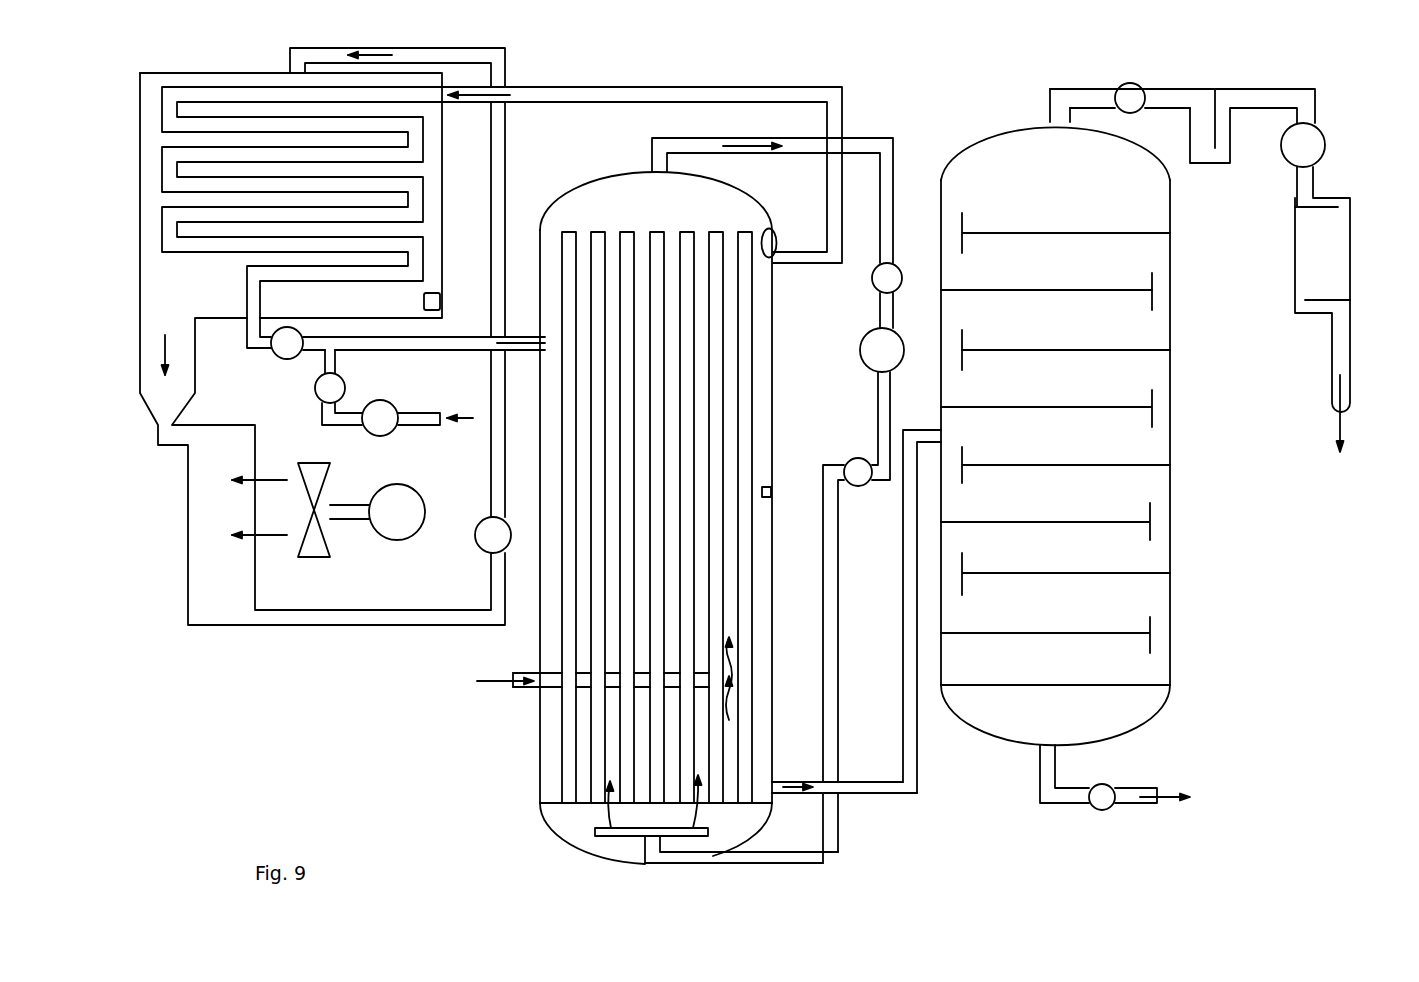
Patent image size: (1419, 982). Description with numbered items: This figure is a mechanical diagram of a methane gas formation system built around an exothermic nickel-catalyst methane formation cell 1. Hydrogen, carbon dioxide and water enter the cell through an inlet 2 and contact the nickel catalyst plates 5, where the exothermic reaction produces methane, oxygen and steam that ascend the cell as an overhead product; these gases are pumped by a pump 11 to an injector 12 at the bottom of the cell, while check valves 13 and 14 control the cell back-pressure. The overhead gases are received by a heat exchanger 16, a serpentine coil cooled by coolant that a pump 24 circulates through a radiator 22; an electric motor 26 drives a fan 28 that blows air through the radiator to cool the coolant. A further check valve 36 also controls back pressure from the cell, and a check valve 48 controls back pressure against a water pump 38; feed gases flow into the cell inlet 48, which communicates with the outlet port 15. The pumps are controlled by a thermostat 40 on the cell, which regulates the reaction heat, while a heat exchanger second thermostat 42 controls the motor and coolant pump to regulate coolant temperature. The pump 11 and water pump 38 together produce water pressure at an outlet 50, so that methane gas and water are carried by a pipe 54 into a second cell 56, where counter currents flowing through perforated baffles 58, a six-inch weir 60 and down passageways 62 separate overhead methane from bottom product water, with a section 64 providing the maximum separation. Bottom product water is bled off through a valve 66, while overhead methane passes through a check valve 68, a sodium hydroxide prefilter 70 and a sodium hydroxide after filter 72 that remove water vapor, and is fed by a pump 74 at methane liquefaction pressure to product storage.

The methane formation cell 1 is at (779, 392).
The inlet 2 is at (514, 673).
The nickel catalyst plates 5 is at (656, 231).
The pump 11 is at (863, 336).
The injector 12 is at (706, 824).
The check valve 13 is at (871, 279).
The check valve 14 is at (862, 457).
The outlet port 15 is at (766, 228).
The heat exchanger 16 is at (446, 192).
The radiator 22 is at (183, 526).
The pump 24 is at (476, 541).
The electric motor 26 is at (440, 472).
The fan 28 is at (302, 462).
The check valve 36 is at (278, 358).
The water pump 38 is at (396, 400).
The thermostat 40 is at (772, 493).
The heat exchanger second thermostat 42 is at (436, 292).
The check valve and cell inlet 48 is at (314, 390).
The outlet 50 is at (772, 781).
The pipe 54 is at (880, 795).
The cell 56 is at (1180, 400).
The perforated baffles 58 is at (1036, 290).
The weir 60 is at (1152, 300).
The down passageways 62 is at (953, 342).
The section 64 is at (1078, 338).
The valve 66 is at (1104, 784).
The check valve 68 is at (1127, 82).
The sodium hydroxide prefilter 70 is at (1233, 150).
The sodium hydroxide after filter 72 is at (1288, 248).
The pump 74 is at (1326, 145).